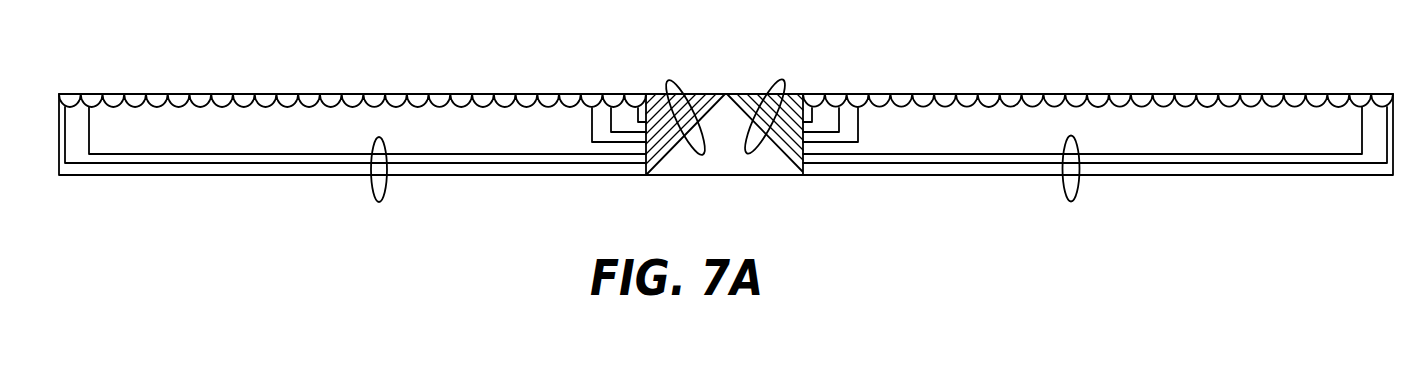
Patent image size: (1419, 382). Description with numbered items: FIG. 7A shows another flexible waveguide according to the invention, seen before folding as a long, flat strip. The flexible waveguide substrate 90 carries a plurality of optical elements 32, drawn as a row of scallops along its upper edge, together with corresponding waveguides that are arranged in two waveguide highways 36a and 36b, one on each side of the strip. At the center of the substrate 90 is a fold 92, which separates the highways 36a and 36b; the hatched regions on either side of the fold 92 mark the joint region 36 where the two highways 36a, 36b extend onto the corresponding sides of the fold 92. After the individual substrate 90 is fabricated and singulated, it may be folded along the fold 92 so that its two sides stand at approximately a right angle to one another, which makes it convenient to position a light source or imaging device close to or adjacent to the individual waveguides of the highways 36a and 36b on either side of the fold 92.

The flexible waveguide substrate 90 is at (203, 237).
The optical elements 32 is at (397, 93).
The waveguide highways 36 is at (677, 92).
The waveguide highway 36a is at (370, 187).
The waveguide highway 36b is at (1078, 188).
The fold 92 is at (740, 93).